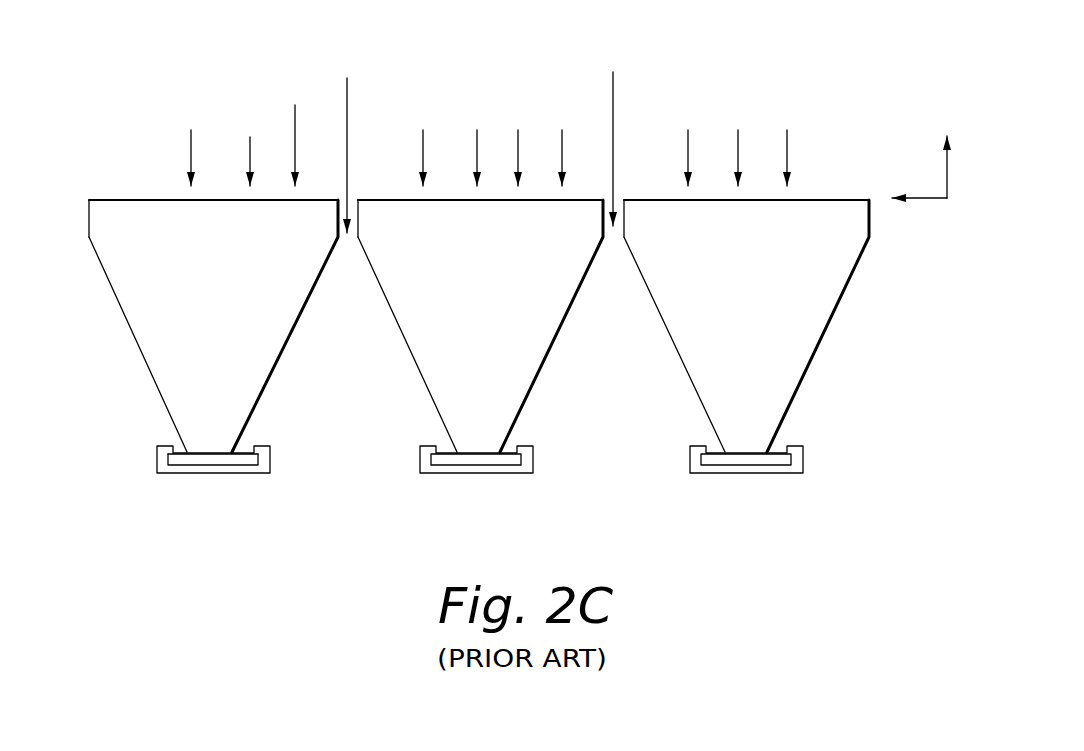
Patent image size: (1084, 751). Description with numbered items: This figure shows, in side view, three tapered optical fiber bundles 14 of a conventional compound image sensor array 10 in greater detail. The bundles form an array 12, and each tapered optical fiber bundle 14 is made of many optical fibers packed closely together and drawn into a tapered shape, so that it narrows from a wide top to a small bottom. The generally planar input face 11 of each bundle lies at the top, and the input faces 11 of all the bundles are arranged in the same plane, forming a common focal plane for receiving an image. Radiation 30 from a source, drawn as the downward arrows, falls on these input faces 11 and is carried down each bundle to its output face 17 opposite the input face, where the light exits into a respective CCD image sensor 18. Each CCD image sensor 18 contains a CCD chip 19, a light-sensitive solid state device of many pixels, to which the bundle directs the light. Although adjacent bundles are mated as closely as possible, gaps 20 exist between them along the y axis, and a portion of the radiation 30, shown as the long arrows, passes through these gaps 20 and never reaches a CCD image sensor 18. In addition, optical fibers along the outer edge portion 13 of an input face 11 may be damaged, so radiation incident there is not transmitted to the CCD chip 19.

The compound image sensor array 10 is at (861, 108).
The input face 11 is at (158, 200).
The array 12 is at (219, 138).
The outer edge portion 13 is at (328, 200).
The tapered optical fiber bundle 14 is at (422, 347).
The output face 17 is at (222, 457).
The CCD image sensor 18 is at (158, 462).
The CCD chip 19 is at (204, 458).
The gap 20 is at (352, 248).
The radiation 30 is at (458, 92).